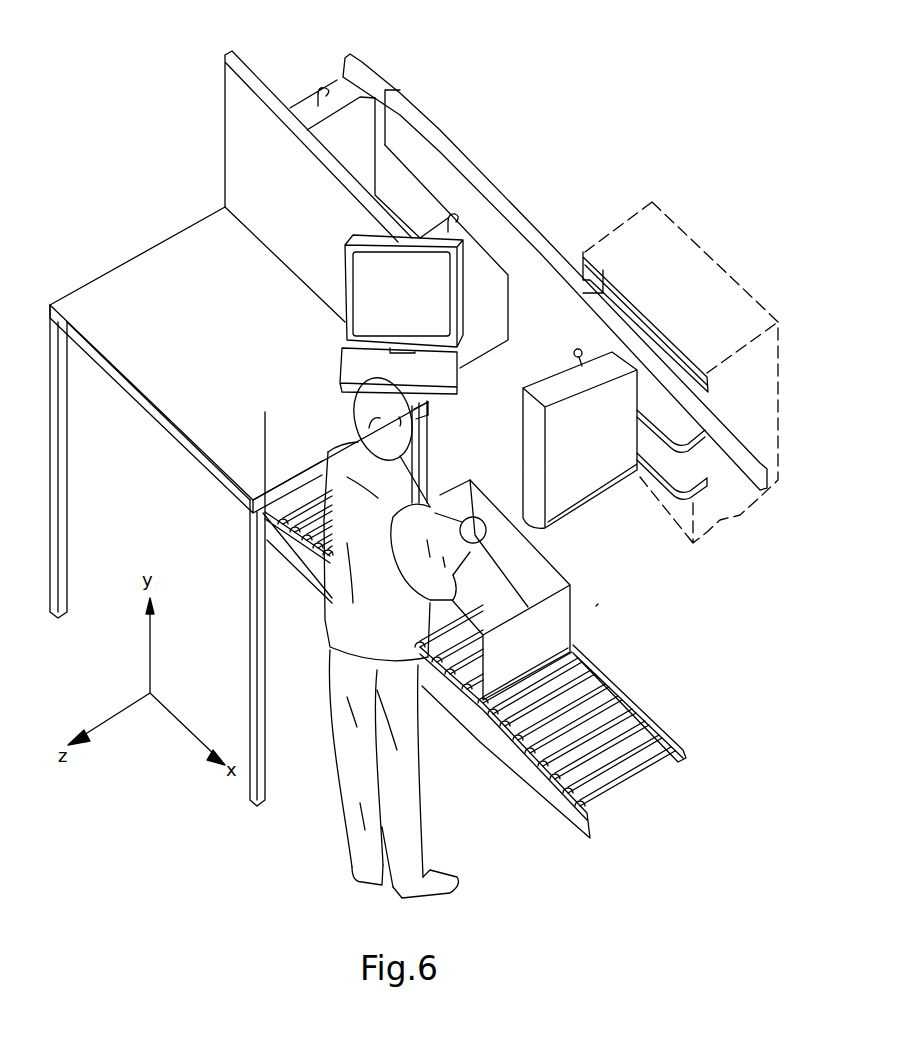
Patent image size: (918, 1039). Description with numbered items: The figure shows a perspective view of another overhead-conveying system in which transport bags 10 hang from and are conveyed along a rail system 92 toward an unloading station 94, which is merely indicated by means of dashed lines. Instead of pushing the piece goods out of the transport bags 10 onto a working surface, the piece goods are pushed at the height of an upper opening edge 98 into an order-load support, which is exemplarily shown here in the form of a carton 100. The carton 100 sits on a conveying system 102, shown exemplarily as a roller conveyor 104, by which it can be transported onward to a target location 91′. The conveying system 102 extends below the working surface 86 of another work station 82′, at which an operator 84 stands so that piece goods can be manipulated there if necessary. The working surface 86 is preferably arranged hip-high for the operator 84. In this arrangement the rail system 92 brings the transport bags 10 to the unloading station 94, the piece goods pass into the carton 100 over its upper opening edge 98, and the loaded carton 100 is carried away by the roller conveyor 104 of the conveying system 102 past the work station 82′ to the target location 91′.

The transport bag 10 is at (380, 185).
The work station 82′ is at (95, 258).
The operator 84 is at (362, 838).
The working surface 86 is at (206, 399).
The target location 91′ is at (598, 604).
The rail system 92 is at (742, 436).
The unloading station 94 is at (730, 258).
The upper opening edge 98 is at (557, 563).
The carton 100 is at (470, 647).
The conveying system 102 is at (648, 810).
The roller conveyor 104 is at (664, 736).